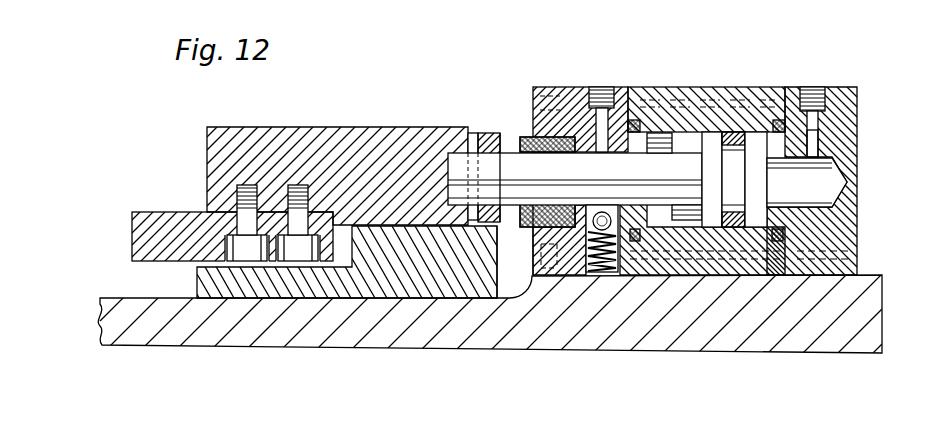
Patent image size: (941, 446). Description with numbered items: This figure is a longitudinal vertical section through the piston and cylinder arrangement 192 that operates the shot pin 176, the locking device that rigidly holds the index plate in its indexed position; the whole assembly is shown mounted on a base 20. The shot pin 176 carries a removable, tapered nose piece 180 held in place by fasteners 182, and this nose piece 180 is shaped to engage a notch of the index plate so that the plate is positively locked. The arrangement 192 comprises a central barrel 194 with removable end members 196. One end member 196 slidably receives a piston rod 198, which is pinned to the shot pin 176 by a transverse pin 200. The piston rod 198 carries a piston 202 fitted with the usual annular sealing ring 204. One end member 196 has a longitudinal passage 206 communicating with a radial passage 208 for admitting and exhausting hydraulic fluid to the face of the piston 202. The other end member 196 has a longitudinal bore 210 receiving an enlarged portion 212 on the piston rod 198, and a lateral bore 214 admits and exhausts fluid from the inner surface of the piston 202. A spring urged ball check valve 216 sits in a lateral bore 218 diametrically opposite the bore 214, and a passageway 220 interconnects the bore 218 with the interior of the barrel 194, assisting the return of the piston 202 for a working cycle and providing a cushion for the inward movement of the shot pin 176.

The base 20 is at (777, 346).
The shot pin 176 is at (357, 142).
The nose piece 180 is at (147, 235).
The fasteners 182 is at (242, 225).
The piston and cylinder arrangement 192 is at (774, 82).
The central barrel 194 is at (715, 92).
The end members 196 is at (567, 92).
The piston rod 198 is at (512, 163).
The transverse pin 200 is at (471, 133).
The piston 202 is at (705, 137).
The annular sealing ring 204 is at (735, 133).
The longitudinal passage 206 is at (847, 170).
The radial passage 208 is at (818, 137).
The longitudinal bore 210 is at (643, 203).
The enlarged portion 212 is at (668, 135).
The lateral bore 214 is at (603, 87).
The spring urged ball check valve 216 is at (598, 203).
The lateral bore 218 is at (590, 270).
The passageway 220 is at (658, 238).